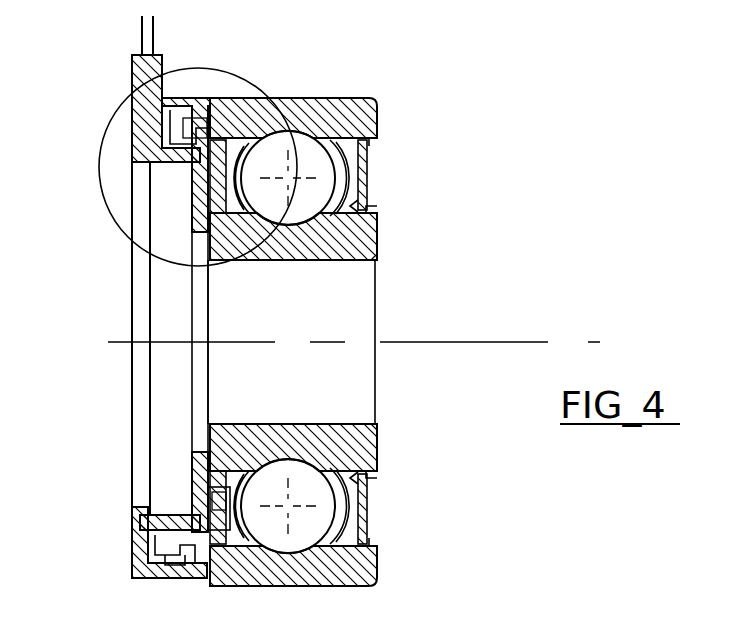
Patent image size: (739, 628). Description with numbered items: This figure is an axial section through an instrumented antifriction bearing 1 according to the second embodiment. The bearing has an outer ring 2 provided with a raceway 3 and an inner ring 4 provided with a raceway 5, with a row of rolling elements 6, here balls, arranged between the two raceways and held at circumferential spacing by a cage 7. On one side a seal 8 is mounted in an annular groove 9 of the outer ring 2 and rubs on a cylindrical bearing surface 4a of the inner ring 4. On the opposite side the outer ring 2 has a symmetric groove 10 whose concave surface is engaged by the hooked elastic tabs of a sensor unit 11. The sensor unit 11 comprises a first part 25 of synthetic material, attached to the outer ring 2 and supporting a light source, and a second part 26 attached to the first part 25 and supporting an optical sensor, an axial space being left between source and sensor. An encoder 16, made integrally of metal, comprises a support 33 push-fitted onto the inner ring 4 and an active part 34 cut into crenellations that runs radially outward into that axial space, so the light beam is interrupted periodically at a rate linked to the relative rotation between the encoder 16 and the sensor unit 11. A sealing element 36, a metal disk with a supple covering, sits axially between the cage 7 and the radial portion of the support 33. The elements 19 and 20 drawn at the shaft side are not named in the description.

The antifriction bearing 1 is at (390, 103).
The outer ring 2 is at (367, 113).
The raceway 3 is at (367, 162).
The inner ring 4 is at (342, 253).
The cylindrical bearing surface 4a is at (363, 208).
The raceway 5 is at (305, 215).
The rolling elements 6 is at (373, 240).
The cage 7 is at (367, 183).
The seal 8 is at (366, 168).
The annular groove 9 is at (364, 150).
The groove 10 is at (245, 128).
The sensor unit 11 is at (130, 135).
The encoder 16 is at (192, 213).
The flange 19 is at (133, 70).
The shaft 20 is at (147, 40).
The first part 25 is at (182, 582).
The second part 26 is at (163, 563).
The support 33 is at (165, 370).
The active part 34 is at (187, 565).
The sealing element 36 is at (218, 500).